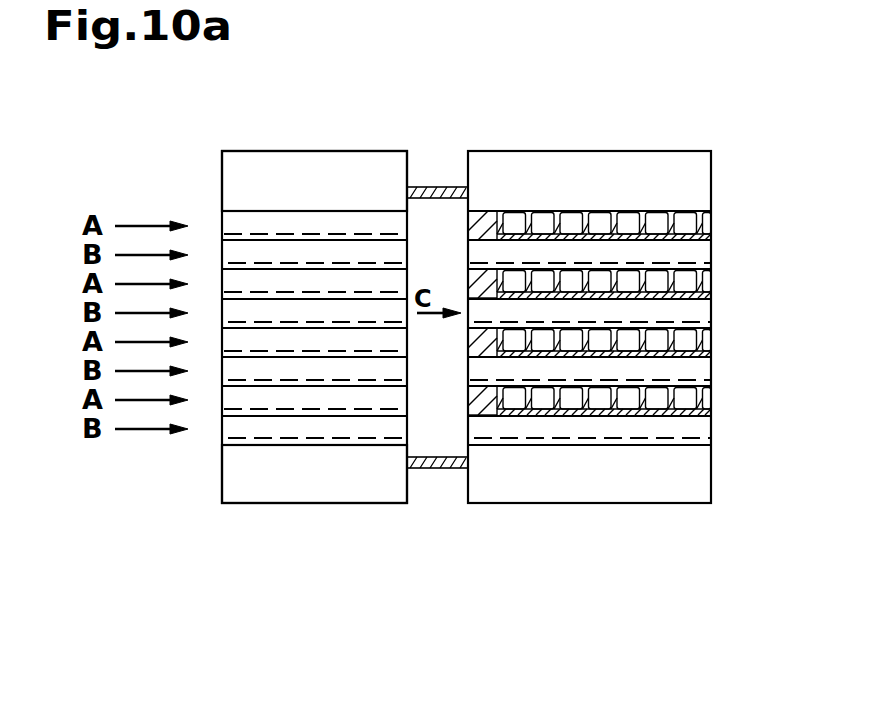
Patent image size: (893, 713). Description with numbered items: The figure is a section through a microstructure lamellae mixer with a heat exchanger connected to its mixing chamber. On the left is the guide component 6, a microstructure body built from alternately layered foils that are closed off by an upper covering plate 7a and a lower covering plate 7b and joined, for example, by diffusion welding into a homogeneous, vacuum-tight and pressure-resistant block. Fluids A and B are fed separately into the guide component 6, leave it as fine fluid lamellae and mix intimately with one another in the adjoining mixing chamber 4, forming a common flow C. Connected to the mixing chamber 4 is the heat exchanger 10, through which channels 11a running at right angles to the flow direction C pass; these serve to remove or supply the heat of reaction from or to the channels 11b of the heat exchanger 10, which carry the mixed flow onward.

The guide component 6 is at (277, 147).
The upper covering plate 7a is at (338, 177).
The lower covering plate 7b is at (323, 482).
The mixing chamber 4 is at (436, 437).
The heat exchanger 10 is at (638, 296).
The channels running at right angles to the flow direction 11a is at (693, 398).
The channels 11b is at (693, 371).